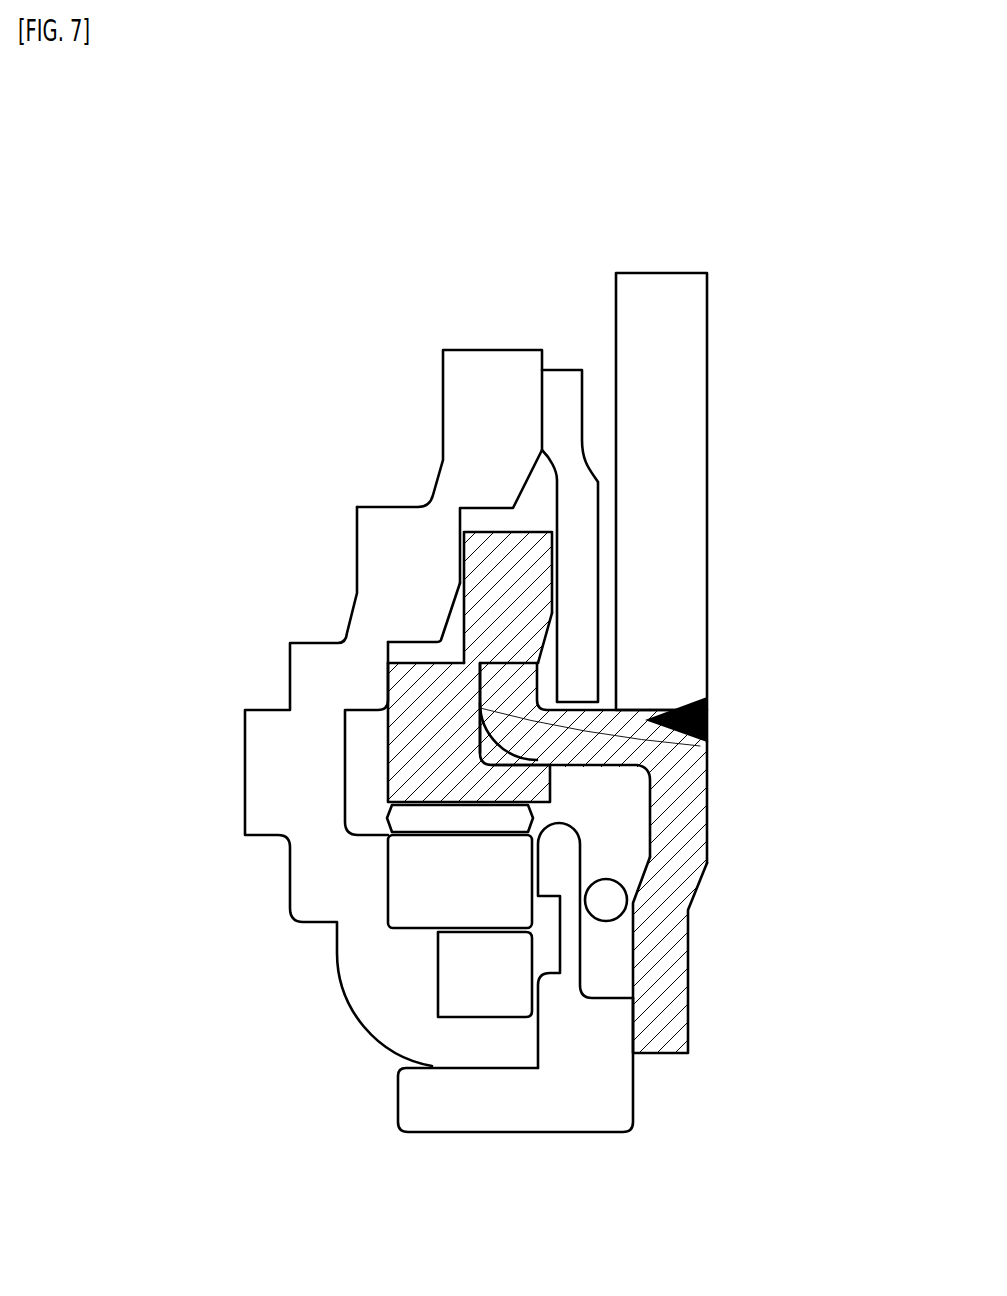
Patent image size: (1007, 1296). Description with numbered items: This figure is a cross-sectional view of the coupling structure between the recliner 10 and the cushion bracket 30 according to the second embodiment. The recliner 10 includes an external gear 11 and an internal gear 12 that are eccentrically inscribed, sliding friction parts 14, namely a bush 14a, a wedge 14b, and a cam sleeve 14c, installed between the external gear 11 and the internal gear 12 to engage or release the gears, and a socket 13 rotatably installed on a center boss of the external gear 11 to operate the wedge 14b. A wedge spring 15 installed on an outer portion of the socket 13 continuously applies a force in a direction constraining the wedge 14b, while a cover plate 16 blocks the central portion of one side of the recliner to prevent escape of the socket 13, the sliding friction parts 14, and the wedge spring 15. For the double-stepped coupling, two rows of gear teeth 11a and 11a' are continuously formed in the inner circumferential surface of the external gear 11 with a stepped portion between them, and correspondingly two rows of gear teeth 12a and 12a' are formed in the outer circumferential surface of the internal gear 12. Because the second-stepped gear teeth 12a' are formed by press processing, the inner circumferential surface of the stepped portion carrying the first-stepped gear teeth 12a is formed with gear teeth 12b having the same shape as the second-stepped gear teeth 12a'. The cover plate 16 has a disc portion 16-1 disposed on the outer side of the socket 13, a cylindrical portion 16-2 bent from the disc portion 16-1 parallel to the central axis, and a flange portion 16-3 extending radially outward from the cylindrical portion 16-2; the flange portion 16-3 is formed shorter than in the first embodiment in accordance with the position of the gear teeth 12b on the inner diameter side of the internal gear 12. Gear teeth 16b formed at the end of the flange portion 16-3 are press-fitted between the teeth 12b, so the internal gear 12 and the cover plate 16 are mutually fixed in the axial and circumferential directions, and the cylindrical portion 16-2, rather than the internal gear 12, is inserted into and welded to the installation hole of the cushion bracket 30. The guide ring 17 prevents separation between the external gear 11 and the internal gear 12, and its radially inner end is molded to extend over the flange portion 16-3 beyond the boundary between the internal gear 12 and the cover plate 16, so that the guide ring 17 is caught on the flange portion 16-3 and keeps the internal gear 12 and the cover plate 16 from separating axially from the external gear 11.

The recliner 10 is at (317, 405).
The external gear 11 is at (262, 752).
The gear teeth 11a is at (449, 466).
The gear teeth 11a' is at (329, 612).
The internal gear 12 is at (412, 730).
The first-stepped gear teeth 12a is at (447, 549).
The second-stepped gear teeth 12a' is at (317, 656).
The gear teeth 12b is at (530, 653).
The socket 13 is at (613, 1095).
The sliding friction parts 14 is at (137, 873).
The bush 14a is at (390, 818).
The wedge 14b is at (422, 890).
The cam sleeve 14c is at (462, 978).
The wedge spring 15 is at (612, 903).
The cover plate 16 is at (735, 1007).
The disc portion 16-1 is at (702, 882).
The cylindrical portion 16-2 is at (615, 770).
The flange portion 16-3 is at (700, 747).
The gear teeth 16b is at (503, 665).
The guide ring 17 is at (558, 370).
The cushion bracket 30 is at (663, 290).